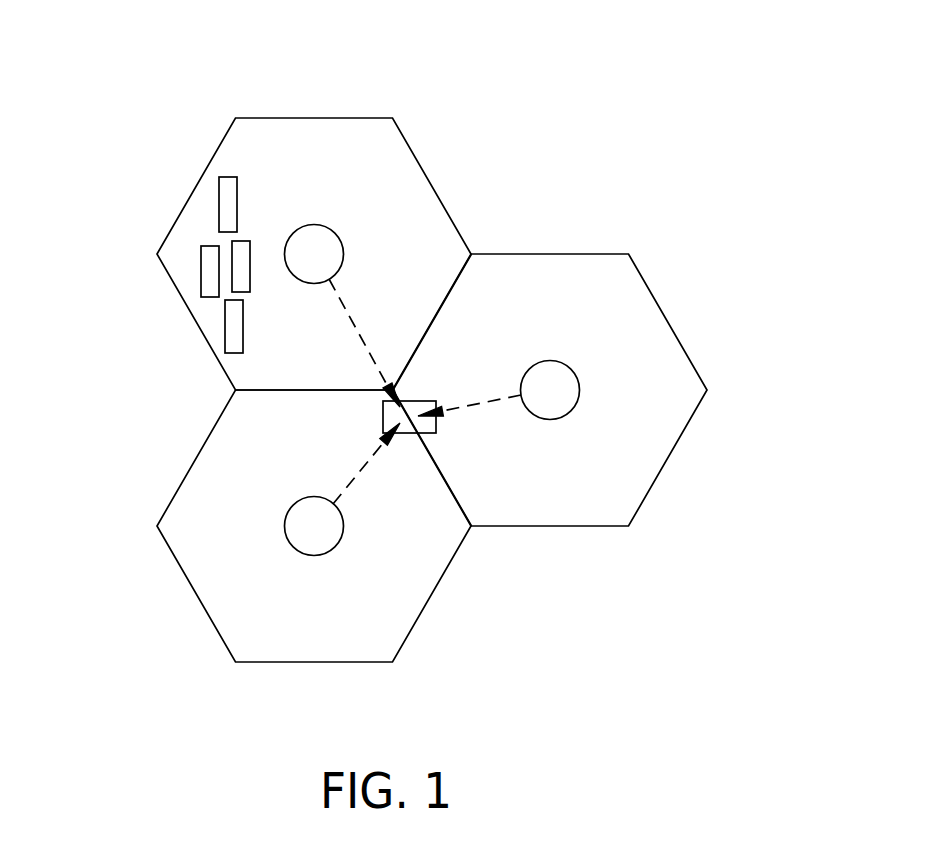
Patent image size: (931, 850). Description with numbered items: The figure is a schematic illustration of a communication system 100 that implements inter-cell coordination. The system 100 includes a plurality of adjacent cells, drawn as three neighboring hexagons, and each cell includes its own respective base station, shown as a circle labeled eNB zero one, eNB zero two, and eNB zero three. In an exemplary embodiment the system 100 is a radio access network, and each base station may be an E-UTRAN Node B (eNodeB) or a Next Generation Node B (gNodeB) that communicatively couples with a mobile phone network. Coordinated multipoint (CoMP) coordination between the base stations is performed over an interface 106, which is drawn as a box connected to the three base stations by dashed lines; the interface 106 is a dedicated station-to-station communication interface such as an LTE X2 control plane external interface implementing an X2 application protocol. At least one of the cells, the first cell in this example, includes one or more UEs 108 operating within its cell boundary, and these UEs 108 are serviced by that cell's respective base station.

The communication system 100 is at (549, 75).
The interface 106 is at (423, 401).
The UEs 108 is at (225, 312).